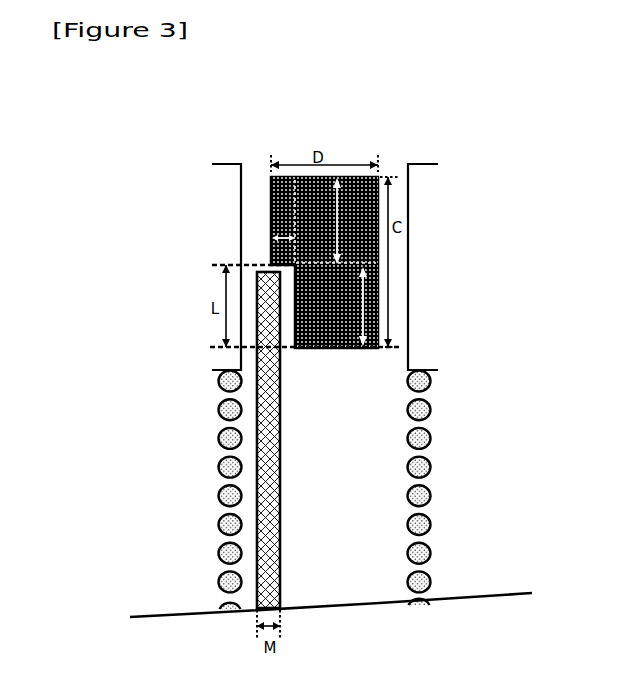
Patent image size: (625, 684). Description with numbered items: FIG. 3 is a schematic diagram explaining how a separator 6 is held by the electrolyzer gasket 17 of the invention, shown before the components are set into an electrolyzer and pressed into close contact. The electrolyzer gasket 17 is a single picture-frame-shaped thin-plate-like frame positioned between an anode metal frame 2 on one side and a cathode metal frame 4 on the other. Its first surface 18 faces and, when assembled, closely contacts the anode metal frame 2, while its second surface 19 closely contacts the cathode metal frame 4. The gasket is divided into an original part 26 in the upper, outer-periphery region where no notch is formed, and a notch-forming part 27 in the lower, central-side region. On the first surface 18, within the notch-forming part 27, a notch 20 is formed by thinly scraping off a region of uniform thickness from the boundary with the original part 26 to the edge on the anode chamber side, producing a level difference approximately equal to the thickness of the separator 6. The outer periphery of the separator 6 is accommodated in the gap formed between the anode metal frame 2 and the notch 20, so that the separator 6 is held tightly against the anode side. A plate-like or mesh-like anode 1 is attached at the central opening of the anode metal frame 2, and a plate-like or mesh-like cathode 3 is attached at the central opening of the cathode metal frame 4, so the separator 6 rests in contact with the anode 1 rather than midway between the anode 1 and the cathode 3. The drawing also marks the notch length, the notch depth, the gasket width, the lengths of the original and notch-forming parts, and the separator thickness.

The anode 1 is at (217, 465).
The anode metal frame 2 is at (180, 258).
The cathode 3 is at (422, 467).
The cathode metal frame 4 is at (445, 250).
The separator 6 is at (280, 522).
The electrolyzer gasket 17 is at (329, 258).
The first surface 18 is at (271, 218).
The second surface 19 is at (377, 240).
The notch 20 is at (286, 326).
The original part 26 is at (278, 200).
The notch-forming part 27 is at (343, 333).